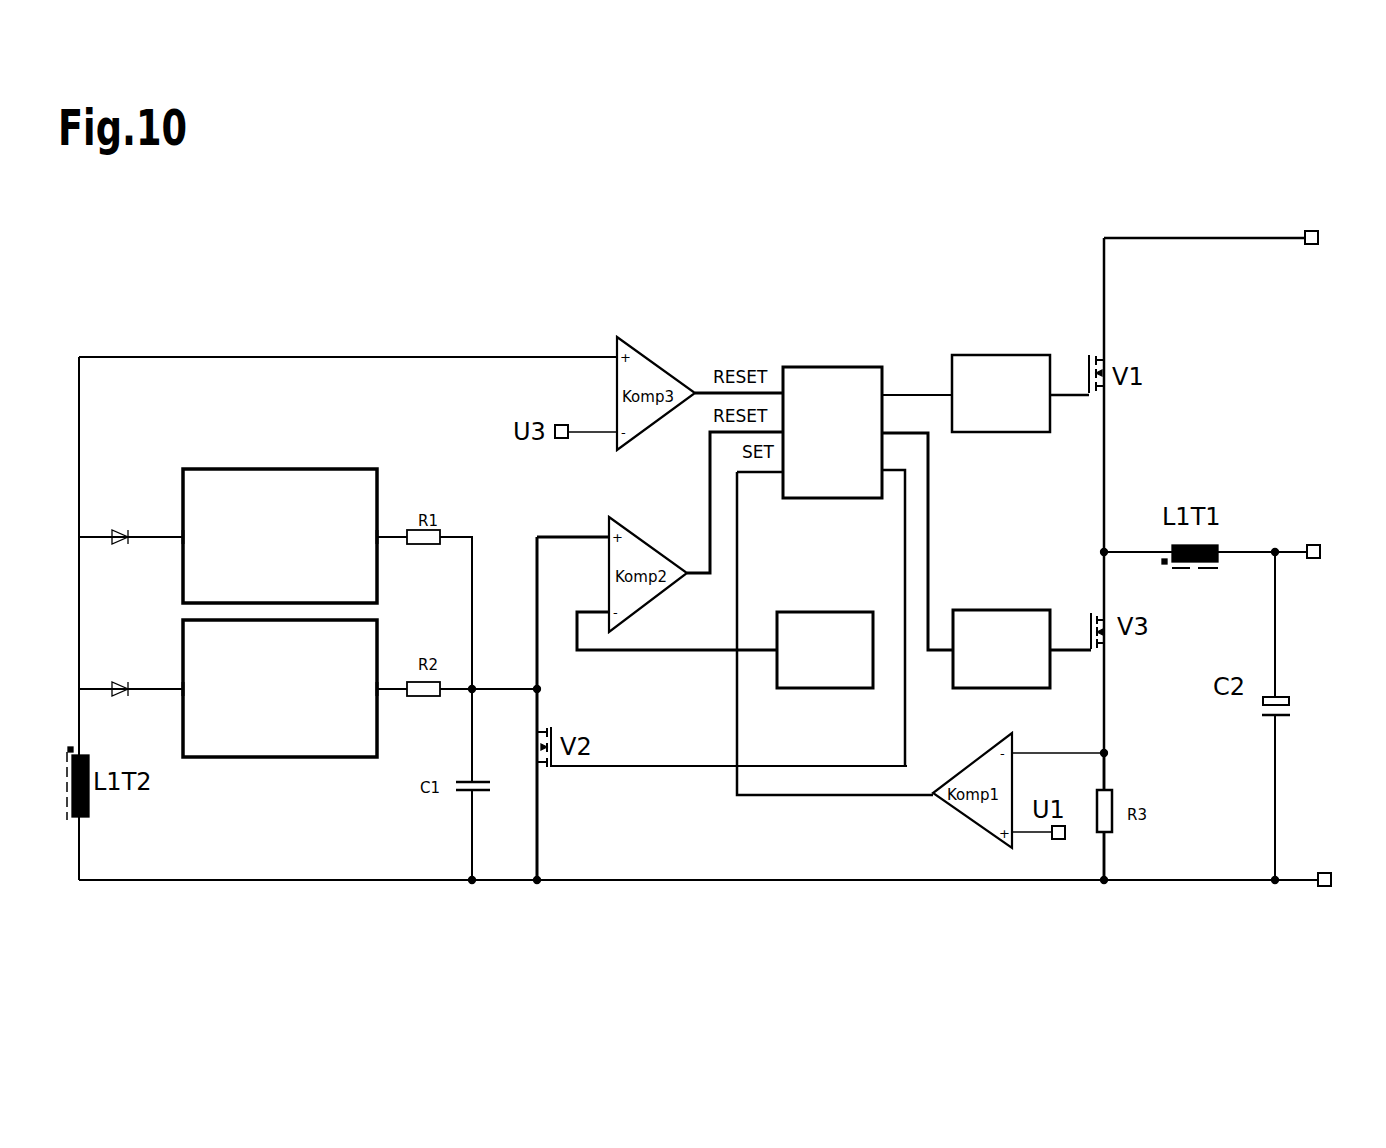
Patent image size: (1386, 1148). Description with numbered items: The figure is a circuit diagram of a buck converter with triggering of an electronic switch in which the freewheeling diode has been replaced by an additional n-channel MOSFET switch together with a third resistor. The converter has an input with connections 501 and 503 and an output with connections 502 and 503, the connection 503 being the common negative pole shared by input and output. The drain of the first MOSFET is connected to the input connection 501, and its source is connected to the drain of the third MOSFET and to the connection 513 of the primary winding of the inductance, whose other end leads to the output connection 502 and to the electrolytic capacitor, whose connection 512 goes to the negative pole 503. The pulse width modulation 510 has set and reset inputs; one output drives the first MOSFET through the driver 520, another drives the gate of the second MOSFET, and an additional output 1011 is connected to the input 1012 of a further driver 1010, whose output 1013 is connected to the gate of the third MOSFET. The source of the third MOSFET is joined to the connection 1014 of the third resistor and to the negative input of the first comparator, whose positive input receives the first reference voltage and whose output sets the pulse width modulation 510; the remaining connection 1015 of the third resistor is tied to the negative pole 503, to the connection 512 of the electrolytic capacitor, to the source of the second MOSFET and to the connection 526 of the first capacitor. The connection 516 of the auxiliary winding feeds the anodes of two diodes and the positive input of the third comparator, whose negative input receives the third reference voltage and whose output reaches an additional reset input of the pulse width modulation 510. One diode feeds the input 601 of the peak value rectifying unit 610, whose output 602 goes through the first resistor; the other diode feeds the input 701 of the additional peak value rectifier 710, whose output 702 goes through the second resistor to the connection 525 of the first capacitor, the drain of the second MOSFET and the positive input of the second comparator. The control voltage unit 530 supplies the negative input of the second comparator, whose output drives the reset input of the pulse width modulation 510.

The input connection 501 is at (1238, 249).
The output connection 502 is at (1296, 543).
The common negative pole connection 503 is at (1326, 862).
The pulse width modulation 510 is at (832, 432).
The connection of capacitor C2 512 is at (1300, 716).
The connection of primary winding L1T1 513 is at (1139, 576).
The connection of auxiliary winding L1T2 516 is at (54, 769).
The driver 520 is at (1001, 393).
The connection of capacitor C1 525 is at (454, 763).
The connection of capacitor C1 526 is at (454, 811).
The control voltage unit 530 is at (825, 650).
The input of peak value rectifying unit 601 is at (208, 538).
The output of peak value rectifying unit 602 is at (350, 538).
The peak value rectifying unit 610 is at (297, 565).
The input of peak value rectifier 701 is at (208, 690).
The output of peak value rectifier 702 is at (350, 690).
The peak value rectifier 710 is at (297, 718).
The driver 1010 is at (1001, 649).
The output of pulse width modulation 1011 is at (885, 425).
The input of driver 1012 is at (940, 643).
The output of driver 1013 is at (1052, 643).
The connection of resistor R3 1014 is at (1139, 773).
The connection of resistor R3 1015 is at (1139, 855).